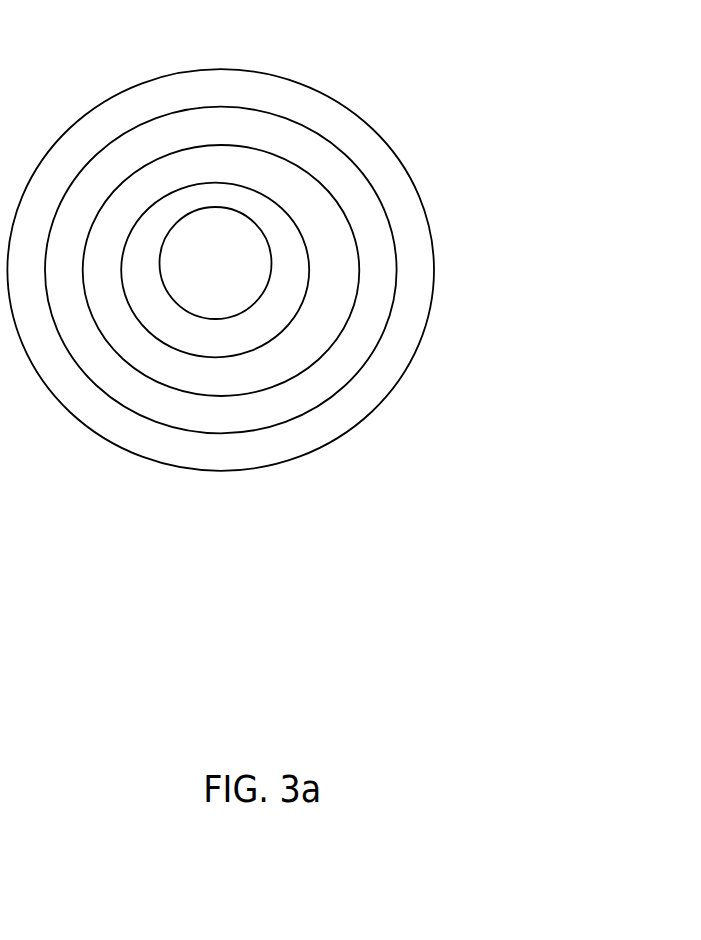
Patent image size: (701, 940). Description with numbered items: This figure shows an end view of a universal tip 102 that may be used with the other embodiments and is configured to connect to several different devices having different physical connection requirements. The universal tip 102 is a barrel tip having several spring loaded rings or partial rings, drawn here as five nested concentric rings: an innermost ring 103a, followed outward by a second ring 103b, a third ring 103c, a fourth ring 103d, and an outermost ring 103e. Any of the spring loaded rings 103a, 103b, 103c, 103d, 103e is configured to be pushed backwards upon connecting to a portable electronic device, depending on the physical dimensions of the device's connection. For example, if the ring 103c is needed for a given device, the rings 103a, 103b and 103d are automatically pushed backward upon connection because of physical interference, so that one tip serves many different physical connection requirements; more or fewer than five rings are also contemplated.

The universal tip 102 is at (314, 282).
The spring loaded ring 103a is at (234, 207).
The spring loaded ring 103b is at (283, 207).
The spring loaded ring 103c is at (347, 245).
The spring loaded ring 103d is at (345, 383).
The spring loaded ring 103e is at (259, 471).